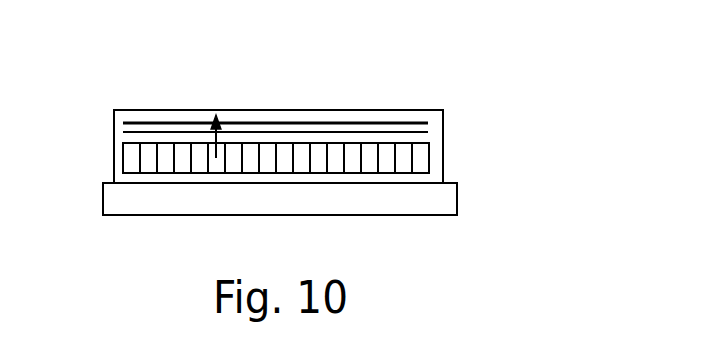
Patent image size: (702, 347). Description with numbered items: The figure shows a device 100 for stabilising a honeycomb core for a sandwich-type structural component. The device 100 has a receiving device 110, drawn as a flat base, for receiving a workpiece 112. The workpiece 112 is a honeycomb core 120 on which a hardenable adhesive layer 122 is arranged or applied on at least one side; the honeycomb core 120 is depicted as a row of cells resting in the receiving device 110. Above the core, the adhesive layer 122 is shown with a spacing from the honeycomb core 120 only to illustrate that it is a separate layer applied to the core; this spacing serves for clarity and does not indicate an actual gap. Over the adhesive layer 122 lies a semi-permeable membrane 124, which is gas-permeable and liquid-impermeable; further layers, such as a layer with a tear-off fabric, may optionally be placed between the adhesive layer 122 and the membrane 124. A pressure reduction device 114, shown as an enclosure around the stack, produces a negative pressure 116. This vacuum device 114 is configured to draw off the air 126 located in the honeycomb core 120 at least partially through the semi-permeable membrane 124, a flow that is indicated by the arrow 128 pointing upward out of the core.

The device 100 is at (422, 80).
The receiving device 110 is at (130, 202).
The workpiece 112 is at (148, 165).
The pressure reduction device 114 is at (270, 109).
The negative pressure 116 is at (380, 118).
The honeycomb core 120 is at (428, 158).
The hardenable adhesive layer 122 is at (430, 131).
The semi-permeable membrane 124 is at (190, 123).
The air 126 is at (300, 163).
The arrow 128 is at (213, 142).